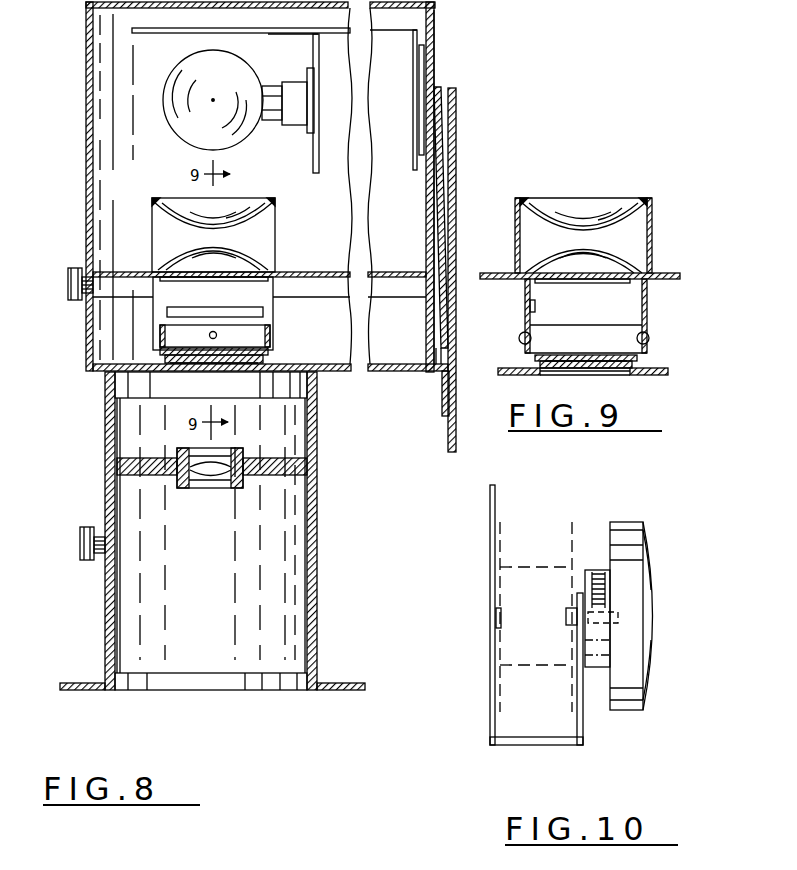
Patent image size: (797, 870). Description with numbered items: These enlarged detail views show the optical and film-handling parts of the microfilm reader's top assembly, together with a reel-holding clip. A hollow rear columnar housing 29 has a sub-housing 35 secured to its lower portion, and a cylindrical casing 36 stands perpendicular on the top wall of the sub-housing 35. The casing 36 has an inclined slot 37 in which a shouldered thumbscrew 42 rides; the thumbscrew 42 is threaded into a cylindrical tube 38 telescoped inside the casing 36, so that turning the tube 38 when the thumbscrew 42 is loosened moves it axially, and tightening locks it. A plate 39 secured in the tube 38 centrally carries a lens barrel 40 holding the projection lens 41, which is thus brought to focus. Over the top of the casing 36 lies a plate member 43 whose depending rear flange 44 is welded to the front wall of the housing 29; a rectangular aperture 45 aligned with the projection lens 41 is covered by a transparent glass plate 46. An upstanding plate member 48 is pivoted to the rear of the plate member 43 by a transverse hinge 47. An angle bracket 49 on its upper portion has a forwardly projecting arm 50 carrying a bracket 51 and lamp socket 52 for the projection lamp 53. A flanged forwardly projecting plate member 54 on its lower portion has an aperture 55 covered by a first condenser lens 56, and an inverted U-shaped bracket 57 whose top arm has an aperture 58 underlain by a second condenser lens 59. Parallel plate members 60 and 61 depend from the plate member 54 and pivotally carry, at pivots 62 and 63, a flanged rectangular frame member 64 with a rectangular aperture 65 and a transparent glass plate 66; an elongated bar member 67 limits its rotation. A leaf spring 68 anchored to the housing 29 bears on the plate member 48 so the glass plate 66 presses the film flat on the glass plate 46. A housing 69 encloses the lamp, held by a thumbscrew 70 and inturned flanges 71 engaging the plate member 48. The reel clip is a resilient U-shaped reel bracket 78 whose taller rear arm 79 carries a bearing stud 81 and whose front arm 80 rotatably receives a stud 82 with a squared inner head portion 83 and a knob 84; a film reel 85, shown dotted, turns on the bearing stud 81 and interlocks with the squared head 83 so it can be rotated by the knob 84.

In FIG. 8, the rear columnar housing 29 is at (449, 432).
In FIG. 8, the sub-housing 35 is at (338, 683).
In FIG. 8, the cylindrical casing 36 is at (318, 586).
In FIG. 8, the inclined slot 37 is at (119, 525).
In FIG. 8, the cylindrical tube 38 is at (243, 690).
In FIG. 8, the plate 39 is at (145, 476).
In FIG. 8, the lens barrel 40 is at (240, 488).
In FIG. 8, the projection lens 41 is at (207, 474).
In FIG. 8, the shouldered thumbscrew 42 is at (83, 560).
In FIG. 8, the plate member 43 is at (322, 372).
In FIG. 9, the plate member 43 is at (660, 368).
In FIG. 8, the depending rear flange 44 is at (443, 385).
In FIG. 8, the rectangular aperture 45 is at (222, 364).
In FIG. 9, the rectangular aperture 45 is at (610, 372).
In FIG. 8, the transparent glass plate 46 is at (188, 366).
In FIG. 9, the transparent glass plate 46 is at (590, 370).
In FIG. 8, the transverse hinge 47 is at (436, 360).
In FIG. 8, the upstanding plate member 48 is at (424, 50).
In FIG. 8, the angle bracket 49 is at (386, 33).
In FIG. 8, the forwardly projecting arm 50 is at (150, 33).
In FIG. 8, the bracket 51 is at (318, 158).
In FIG. 8, the lamp socket 52 is at (290, 126).
In FIG. 8, the projection lamp 53 is at (167, 113).
In FIG. 8, the flanged forwardly projecting plate member 54 is at (310, 272).
In FIG. 9, the flanged forwardly projecting plate member 54 is at (678, 273).
In FIG. 8, the aperture 55 is at (224, 280).
In FIG. 9, the aperture 55 is at (572, 283).
In FIG. 8, the first condenser lens 56 is at (236, 256).
In FIG. 9, the first condenser lens 56 is at (612, 260).
In FIG. 8, the inverted U-shaped bracket 57 is at (275, 230).
In FIG. 9, the inverted U-shaped bracket 57 is at (652, 236).
In FIG. 8, the aperture 58 is at (222, 200).
In FIG. 9, the aperture 58 is at (575, 200).
In FIG. 8, the second condenser lens 59 is at (183, 216).
In FIG. 9, the second condenser lens 59 is at (562, 216).
In FIG. 8, the plate member 60 is at (158, 302).
In FIG. 9, the plate member 60 is at (526, 296).
In FIG. 9, the plate member 61 is at (648, 300).
In FIG. 8, the pivot 62 is at (217, 335).
In FIG. 9, the pivot 62 is at (519, 335).
In FIG. 9, the pivot 63 is at (649, 336).
In FIG. 8, the flanged rectangular frame member 64 is at (270, 326).
In FIG. 9, the flanged rectangular frame member 64 is at (596, 326).
In FIG. 8, the rectangular aperture 65 is at (182, 350).
In FIG. 9, the rectangular aperture 65 is at (606, 356).
In FIG. 8, the transparent glass plate 66 is at (210, 356).
In FIG. 9, the transparent glass plate 66 is at (568, 362).
In FIG. 8, the elongated bar member 67 is at (214, 304).
In FIG. 9, the elongated bar member 67 is at (534, 306).
In FIG. 8, the leaf spring 68 is at (445, 165).
In FIG. 8, the housing 69 is at (86, 90).
In FIG. 8, the thumbscrew 70 is at (68, 283).
In FIG. 8, the inturned flanges 71 is at (435, 70).
In FIG. 10, the resilient U-shaped reel bracket 78 is at (490, 746).
In FIG. 10, the rear arm 79 is at (495, 492).
In FIG. 10, the front arm 80 is at (583, 706).
In FIG. 10, the bearing stud 81 is at (502, 614).
In FIG. 10, the stud 82 is at (606, 628).
In FIG. 10, the squared inner head portion 83 is at (566, 622).
In FIG. 10, the knob 84 is at (625, 522).
In FIG. 10, the film reel 85 is at (510, 562).